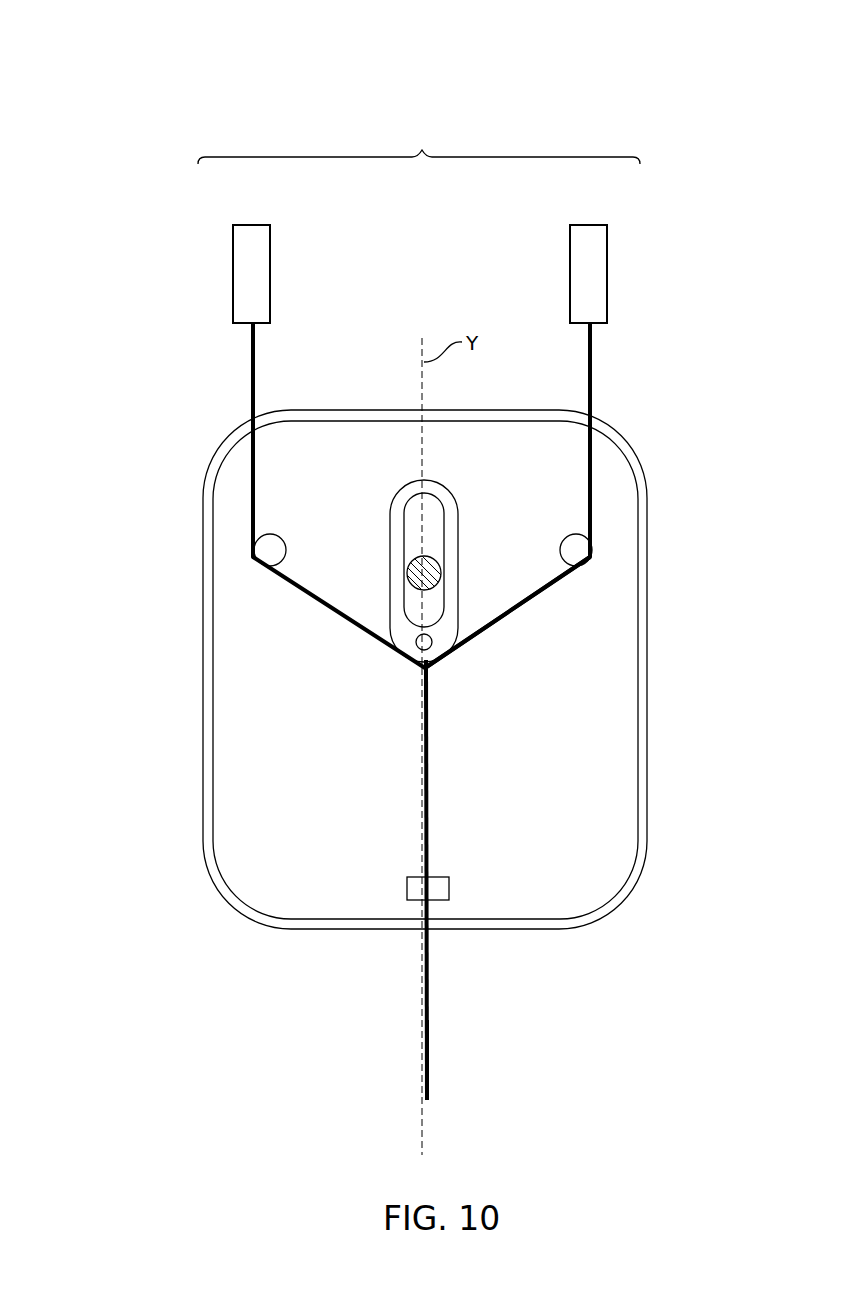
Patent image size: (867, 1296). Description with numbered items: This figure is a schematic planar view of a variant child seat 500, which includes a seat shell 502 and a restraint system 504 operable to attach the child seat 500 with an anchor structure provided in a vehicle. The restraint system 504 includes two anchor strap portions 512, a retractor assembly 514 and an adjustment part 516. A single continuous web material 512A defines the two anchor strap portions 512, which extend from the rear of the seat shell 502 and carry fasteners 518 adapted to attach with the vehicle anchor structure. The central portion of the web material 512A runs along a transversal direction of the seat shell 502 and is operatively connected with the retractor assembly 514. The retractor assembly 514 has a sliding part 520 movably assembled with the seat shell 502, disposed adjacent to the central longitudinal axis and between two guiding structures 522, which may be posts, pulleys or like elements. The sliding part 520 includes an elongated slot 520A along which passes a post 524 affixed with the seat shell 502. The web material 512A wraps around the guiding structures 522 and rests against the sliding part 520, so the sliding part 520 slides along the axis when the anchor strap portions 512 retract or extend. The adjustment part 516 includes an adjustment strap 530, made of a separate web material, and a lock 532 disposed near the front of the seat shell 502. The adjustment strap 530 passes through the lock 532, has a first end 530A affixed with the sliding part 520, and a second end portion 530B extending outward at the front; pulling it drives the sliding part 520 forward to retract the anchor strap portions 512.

The child seat 500 is at (60, 23).
The seat shell 502 is at (645, 848).
The restraint system 504 is at (419, 144).
The anchor strap portions 512 is at (248, 368).
The web material 512A is at (532, 600).
The retractor assembly 514 is at (374, 624).
The adjustment part 516 is at (411, 940).
The fasteners 518 is at (240, 282).
The sliding part 520 is at (460, 543).
The elongated slot 520A is at (398, 492).
The guiding structures 522 is at (268, 550).
The post 524 is at (408, 565).
The adjustment strap 530 is at (423, 767).
The first end 530A is at (445, 681).
The second end portion 530B is at (450, 1053).
The lock 532 is at (449, 887).